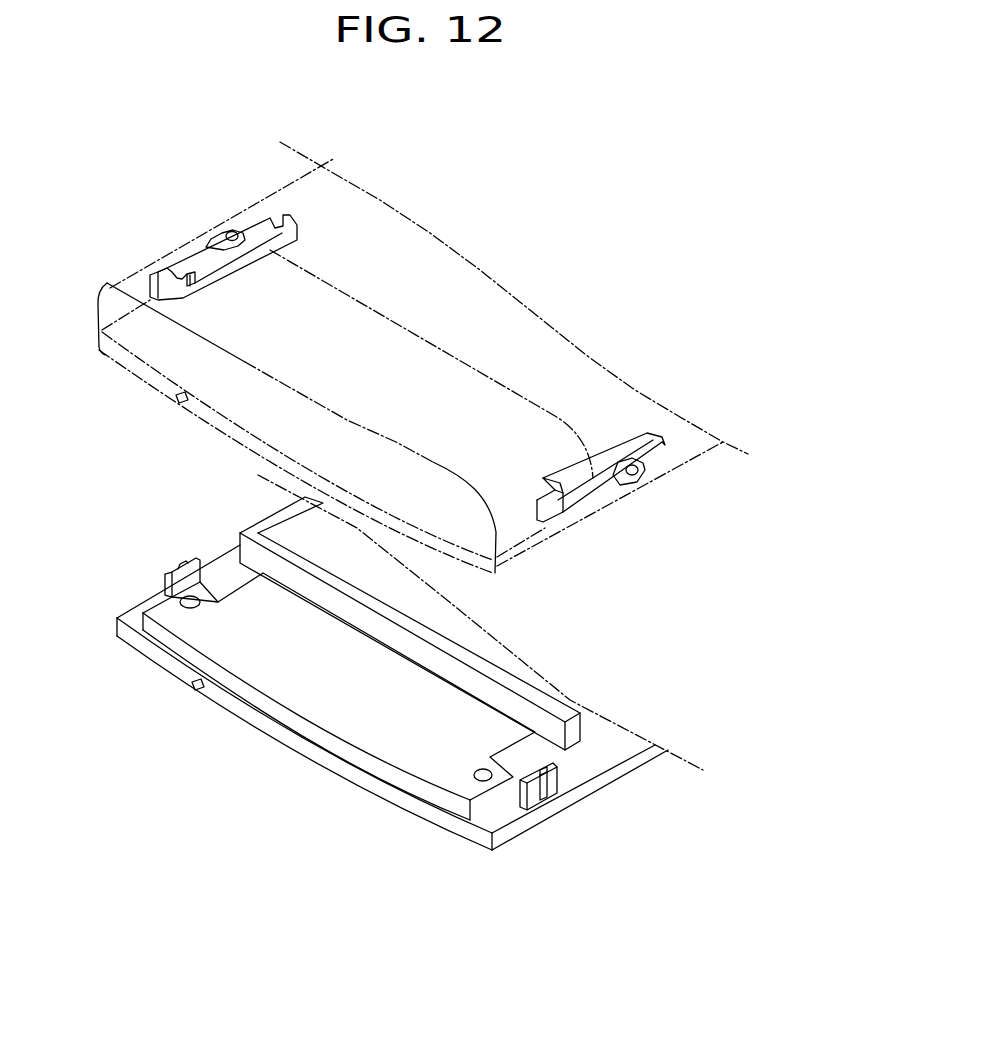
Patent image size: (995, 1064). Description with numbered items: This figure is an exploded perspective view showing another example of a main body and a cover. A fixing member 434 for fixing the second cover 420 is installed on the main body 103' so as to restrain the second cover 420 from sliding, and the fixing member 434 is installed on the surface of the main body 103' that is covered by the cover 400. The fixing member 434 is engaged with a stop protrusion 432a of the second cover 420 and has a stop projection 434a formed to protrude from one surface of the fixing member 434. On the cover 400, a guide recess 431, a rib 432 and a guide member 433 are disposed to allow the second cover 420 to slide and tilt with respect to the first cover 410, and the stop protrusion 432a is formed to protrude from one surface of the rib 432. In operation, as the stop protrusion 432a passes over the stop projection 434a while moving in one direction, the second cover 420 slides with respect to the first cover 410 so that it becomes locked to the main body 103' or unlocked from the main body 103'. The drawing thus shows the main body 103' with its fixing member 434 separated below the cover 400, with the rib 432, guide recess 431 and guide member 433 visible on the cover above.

The cover 400 is at (100, 225).
The first cover 410 is at (670, 472).
The second cover 420 is at (537, 533).
The guide recess 431 is at (227, 233).
The rib 432 is at (213, 273).
The stop protrusion 432a is at (187, 275).
The guide member 433 is at (238, 232).
The fixing member 434 is at (537, 797).
The stop projection 434a is at (557, 795).
The main body 103' is at (392, 712).